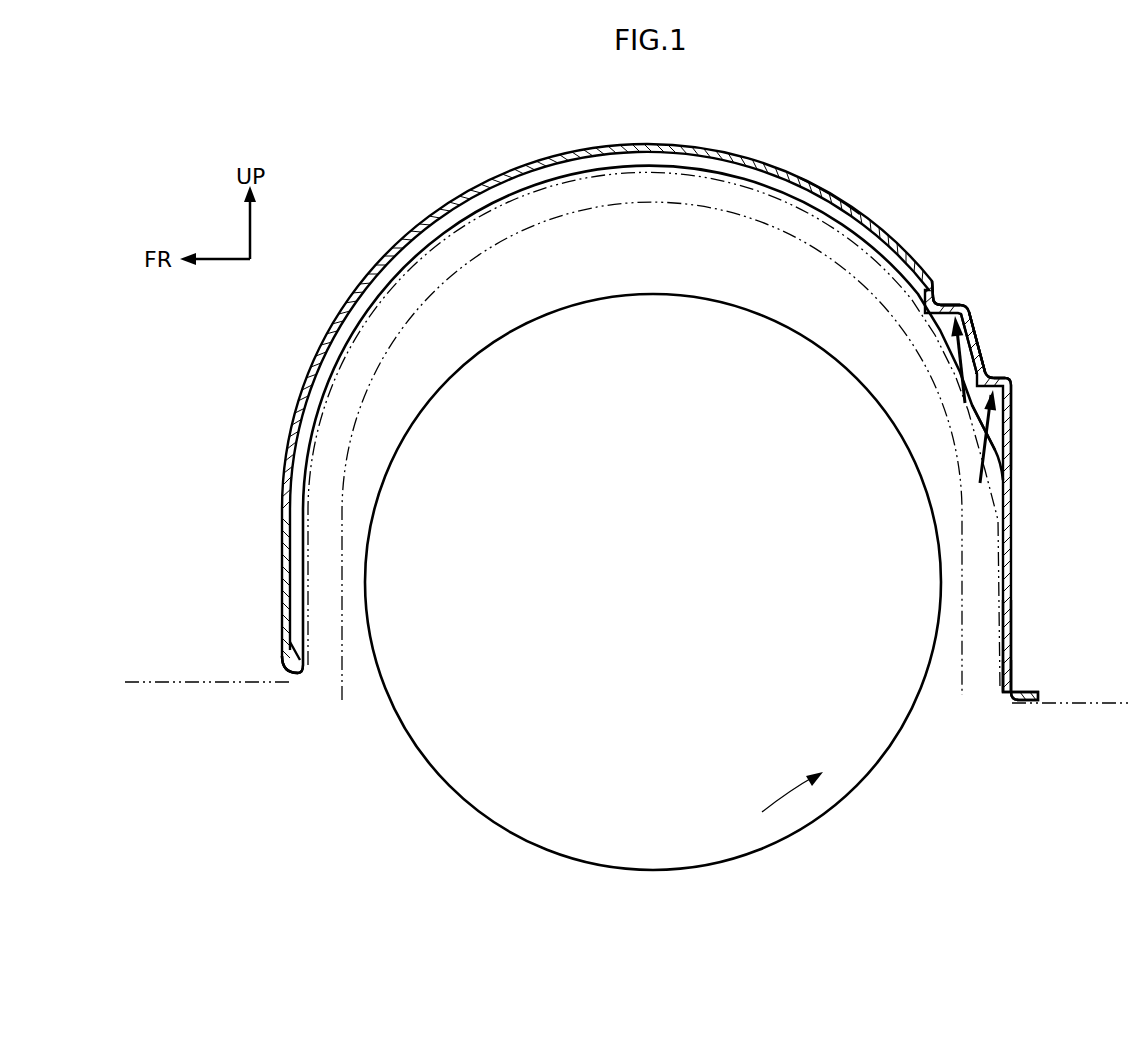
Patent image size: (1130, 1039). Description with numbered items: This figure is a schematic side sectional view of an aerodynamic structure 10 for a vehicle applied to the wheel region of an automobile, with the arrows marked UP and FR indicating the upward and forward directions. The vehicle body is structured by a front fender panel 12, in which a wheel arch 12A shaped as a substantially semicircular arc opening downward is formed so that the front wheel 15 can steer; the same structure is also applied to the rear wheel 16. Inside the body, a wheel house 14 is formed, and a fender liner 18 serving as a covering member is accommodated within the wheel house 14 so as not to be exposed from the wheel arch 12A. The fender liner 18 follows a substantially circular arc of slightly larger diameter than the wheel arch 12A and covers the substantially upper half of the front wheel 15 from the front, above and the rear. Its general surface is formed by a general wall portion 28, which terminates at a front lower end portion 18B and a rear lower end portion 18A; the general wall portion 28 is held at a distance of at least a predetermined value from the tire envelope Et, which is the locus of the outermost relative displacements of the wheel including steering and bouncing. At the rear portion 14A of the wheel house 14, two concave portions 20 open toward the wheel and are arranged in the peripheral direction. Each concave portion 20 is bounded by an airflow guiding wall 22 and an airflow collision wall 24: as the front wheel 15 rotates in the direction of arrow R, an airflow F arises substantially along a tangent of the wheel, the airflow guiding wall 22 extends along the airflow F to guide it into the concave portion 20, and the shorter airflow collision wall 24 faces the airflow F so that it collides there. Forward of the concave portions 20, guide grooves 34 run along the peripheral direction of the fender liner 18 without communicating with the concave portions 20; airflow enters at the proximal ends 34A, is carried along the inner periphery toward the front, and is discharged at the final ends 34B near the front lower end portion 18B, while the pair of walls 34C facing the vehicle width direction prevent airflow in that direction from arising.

The aerodynamic structure for a vehicle 10 is at (966, 139).
The front fender panel 12 is at (200, 666).
The wheel arch 12A is at (768, 200).
The wheel house 14 is at (700, 190).
The rear portion of the wheel house 14A is at (945, 345).
The front wheel 15 is at (672, 582).
The rear wheel 16 is at (852, 768).
The fender liner 18 is at (912, 242).
The rear lower end portion 18A is at (1002, 700).
The front lower end portion 18B is at (283, 650).
The concave portion 20 is at (957, 350).
The airflow guiding wall 22 is at (977, 352).
The airflow collision wall 24 is at (957, 308).
The general wall portion 28 is at (1010, 657).
The guide groove 34 is at (858, 220).
The proximal end 34A is at (928, 284).
The final end 34B is at (292, 676).
The pair of walls 34C is at (828, 200).
The tire envelope Et is at (343, 697).
The airflow F is at (960, 412).
The rotation direction arrow R is at (799, 784).